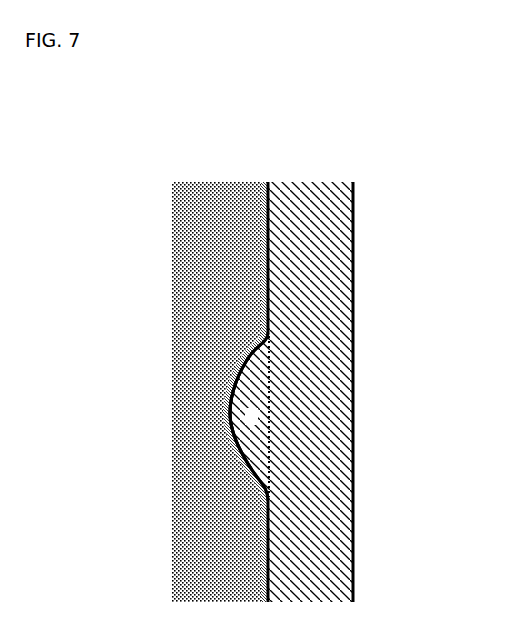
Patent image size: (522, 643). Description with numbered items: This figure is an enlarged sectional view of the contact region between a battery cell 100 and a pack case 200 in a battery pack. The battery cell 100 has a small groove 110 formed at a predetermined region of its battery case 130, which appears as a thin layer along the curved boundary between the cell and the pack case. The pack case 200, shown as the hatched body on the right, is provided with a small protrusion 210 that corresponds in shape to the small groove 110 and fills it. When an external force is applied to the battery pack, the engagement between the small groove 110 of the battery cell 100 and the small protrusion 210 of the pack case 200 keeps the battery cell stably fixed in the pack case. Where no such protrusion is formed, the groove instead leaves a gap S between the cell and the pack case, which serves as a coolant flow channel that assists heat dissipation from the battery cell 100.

The battery cell 100 is at (172, 258).
The small groove 110 is at (225, 437).
The battery case 130 is at (268, 182).
The pack case 200 is at (355, 340).
The small protrusion 210 is at (240, 373).